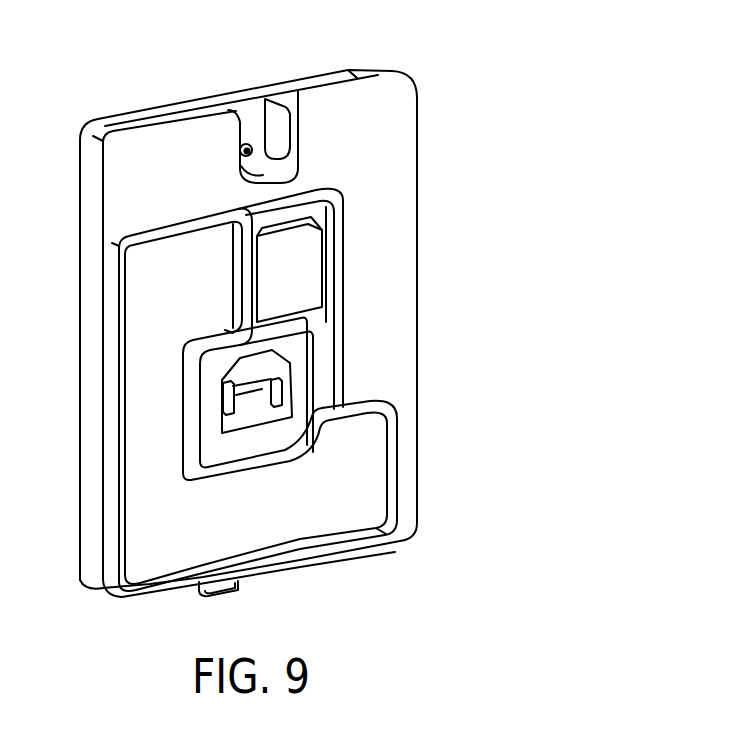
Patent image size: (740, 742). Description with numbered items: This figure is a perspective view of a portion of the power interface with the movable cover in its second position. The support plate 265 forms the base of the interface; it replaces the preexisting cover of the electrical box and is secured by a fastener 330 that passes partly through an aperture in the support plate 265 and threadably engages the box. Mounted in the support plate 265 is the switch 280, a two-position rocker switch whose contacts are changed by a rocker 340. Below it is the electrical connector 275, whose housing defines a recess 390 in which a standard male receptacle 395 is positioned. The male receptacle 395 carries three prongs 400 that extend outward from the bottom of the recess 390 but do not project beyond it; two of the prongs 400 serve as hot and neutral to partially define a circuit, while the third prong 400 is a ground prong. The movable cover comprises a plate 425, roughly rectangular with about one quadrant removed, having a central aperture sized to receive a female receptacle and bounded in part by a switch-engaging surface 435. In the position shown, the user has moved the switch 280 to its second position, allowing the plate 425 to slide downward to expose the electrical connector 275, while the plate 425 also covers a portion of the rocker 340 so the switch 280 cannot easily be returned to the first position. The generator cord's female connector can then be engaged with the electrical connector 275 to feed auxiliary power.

The support plate 265 is at (383, 121).
The fastener 330 is at (300, 92).
The switch-engaging surface 435 is at (182, 368).
The plate 425 is at (280, 538).
The switch 280 is at (325, 252).
The rocker 340 is at (308, 282).
The electrical connector 275 is at (307, 381).
The recess 390 is at (255, 414).
The male receptacle 395 is at (243, 416).
The prongs 400 is at (222, 381).